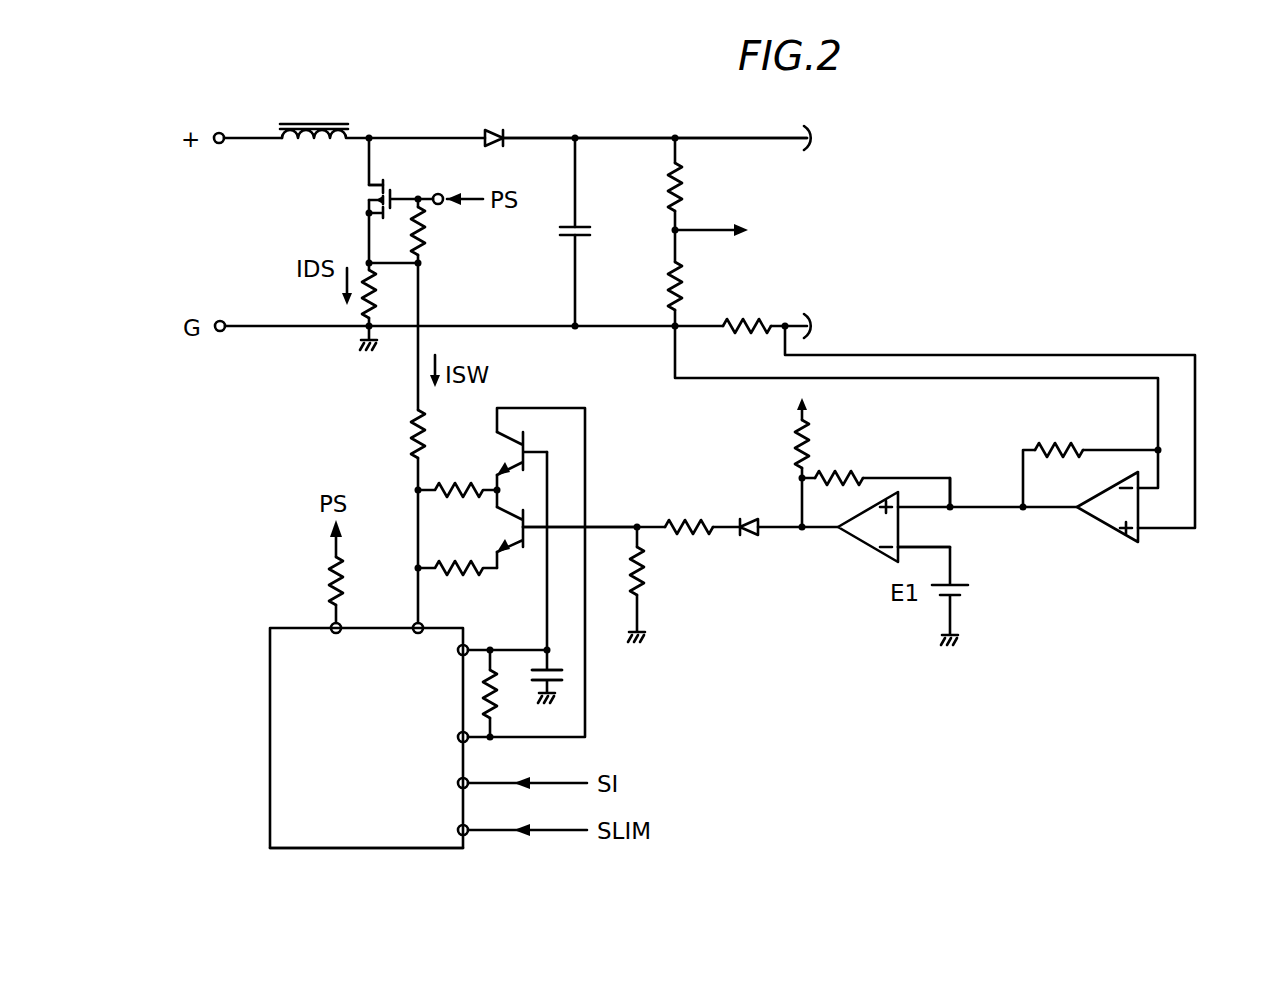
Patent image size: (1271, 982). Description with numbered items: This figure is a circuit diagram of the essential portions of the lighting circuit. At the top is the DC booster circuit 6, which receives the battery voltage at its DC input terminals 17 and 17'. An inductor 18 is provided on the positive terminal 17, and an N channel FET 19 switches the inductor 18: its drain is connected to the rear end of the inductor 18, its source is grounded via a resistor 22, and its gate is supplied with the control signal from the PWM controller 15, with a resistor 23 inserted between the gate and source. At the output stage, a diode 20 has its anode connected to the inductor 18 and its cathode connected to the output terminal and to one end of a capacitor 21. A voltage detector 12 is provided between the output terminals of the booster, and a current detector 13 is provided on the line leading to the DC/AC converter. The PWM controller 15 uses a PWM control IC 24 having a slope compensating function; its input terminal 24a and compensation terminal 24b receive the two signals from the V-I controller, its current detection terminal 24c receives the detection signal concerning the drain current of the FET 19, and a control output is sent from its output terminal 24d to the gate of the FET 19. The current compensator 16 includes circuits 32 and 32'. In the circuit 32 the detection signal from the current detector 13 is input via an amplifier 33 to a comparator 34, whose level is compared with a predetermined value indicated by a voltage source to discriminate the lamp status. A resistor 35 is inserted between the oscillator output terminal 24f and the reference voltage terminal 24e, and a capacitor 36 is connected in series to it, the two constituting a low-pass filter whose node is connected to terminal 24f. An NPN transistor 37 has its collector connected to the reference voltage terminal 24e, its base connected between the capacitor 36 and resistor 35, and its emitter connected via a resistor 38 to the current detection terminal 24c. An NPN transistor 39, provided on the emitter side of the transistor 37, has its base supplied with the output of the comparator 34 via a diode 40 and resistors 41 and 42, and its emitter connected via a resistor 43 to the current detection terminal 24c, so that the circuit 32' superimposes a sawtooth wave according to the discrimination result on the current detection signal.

The DC booster circuit 6 is at (603, 115).
The voltage detector 12 is at (694, 212).
The current detector 13 is at (757, 303).
The PWM controller 15 is at (248, 706).
The current compensator 16 is at (881, 632).
The DC input terminal 17 is at (216, 103).
The DC input terminal 17' is at (226, 361).
The inductor 18 is at (351, 113).
The FET 19 is at (358, 193).
The diode 20 is at (493, 125).
The capacitor 21 is at (580, 225).
The resistor 22 is at (362, 319).
The resistor 23 is at (420, 238).
The PWM control IC 24 is at (268, 780).
The input terminal 24a is at (470, 789).
The compensation terminal 24b is at (470, 836).
The current detection terminal 24c is at (415, 623).
The output terminal 24d is at (331, 623).
The reference voltage terminal 24e is at (470, 743).
The output terminal of the oscillator 24f is at (467, 646).
The circuit 32 is at (1008, 562).
The circuit 32' is at (608, 473).
The amplifier 33 is at (1099, 539).
The comparator 34 is at (860, 552).
The resistor 35 is at (492, 699).
The capacitor 36 is at (556, 665).
The NPN transistor 37 is at (494, 437).
The resistor 38 is at (449, 498).
The NPN transistor 39 is at (530, 549).
The diode 40 is at (752, 538).
The resistor 41 is at (684, 518).
The resistor 42 is at (643, 579).
The resistor 43 is at (442, 566).